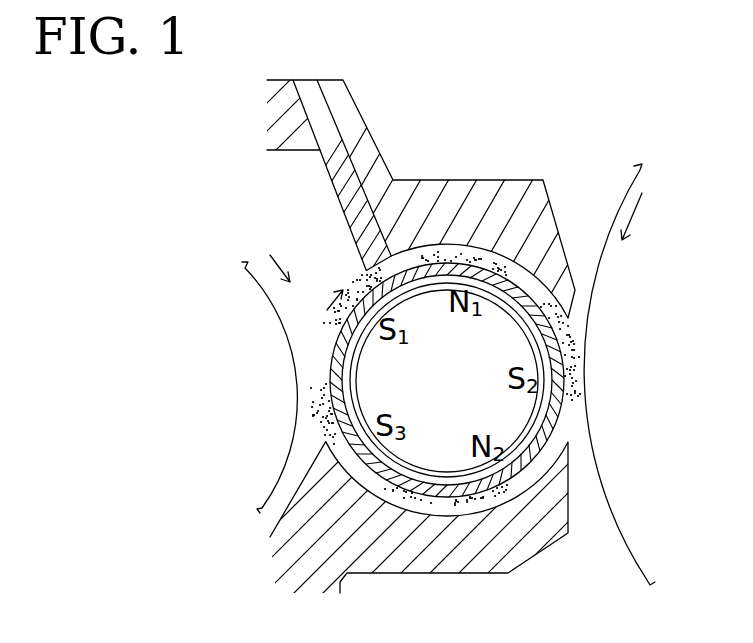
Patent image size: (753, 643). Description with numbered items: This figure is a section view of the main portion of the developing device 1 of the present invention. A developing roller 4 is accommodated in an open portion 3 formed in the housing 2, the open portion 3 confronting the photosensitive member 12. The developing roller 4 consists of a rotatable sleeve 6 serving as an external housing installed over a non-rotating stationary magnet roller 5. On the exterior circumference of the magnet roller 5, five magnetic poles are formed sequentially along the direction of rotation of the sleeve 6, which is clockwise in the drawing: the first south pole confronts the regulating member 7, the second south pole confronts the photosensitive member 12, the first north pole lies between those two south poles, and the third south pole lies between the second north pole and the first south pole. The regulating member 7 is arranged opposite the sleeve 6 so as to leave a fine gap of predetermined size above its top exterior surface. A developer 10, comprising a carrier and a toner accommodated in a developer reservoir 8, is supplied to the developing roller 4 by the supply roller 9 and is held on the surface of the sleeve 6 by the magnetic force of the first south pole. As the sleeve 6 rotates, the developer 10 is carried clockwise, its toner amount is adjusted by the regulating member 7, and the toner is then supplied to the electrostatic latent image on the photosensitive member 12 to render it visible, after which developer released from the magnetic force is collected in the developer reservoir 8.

The developing device 1 is at (543, 182).
The housing 2 is at (532, 547).
The open portion 3 is at (558, 432).
The developing roller 4 is at (563, 328).
The magnet roller 5 is at (432, 297).
The sleeve 6 is at (460, 265).
The regulating member 7 is at (355, 188).
The developer reservoir 8 is at (241, 247).
The supply roller 9 is at (280, 316).
The developer 10 is at (338, 277).
The photosensitive member 12 is at (635, 552).